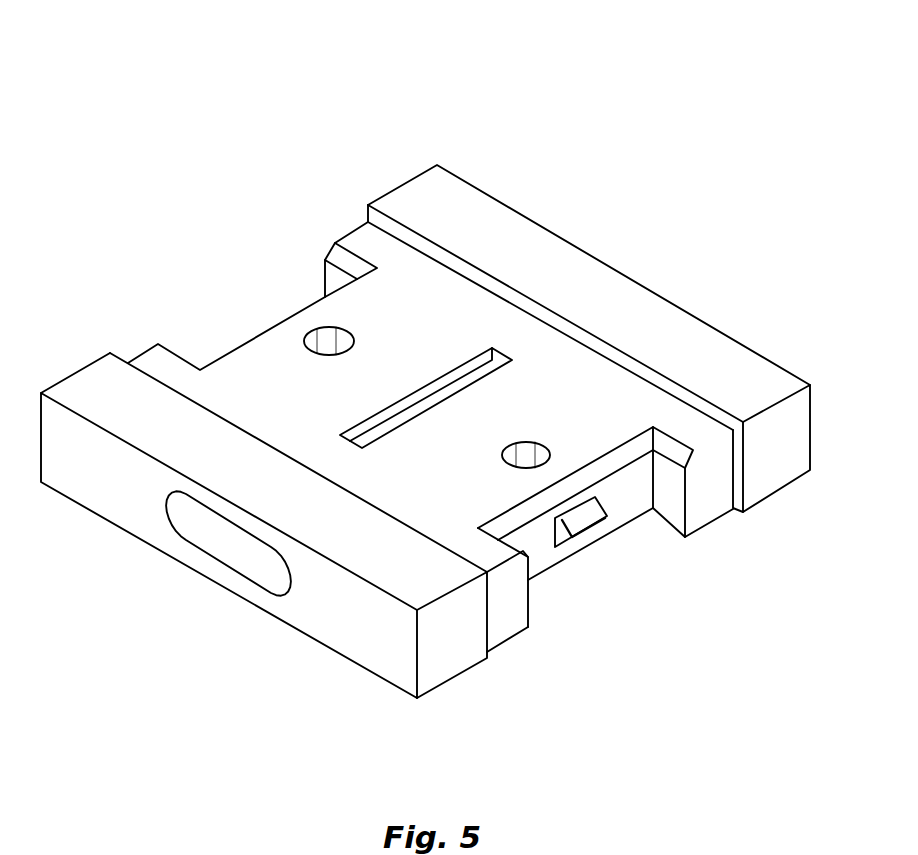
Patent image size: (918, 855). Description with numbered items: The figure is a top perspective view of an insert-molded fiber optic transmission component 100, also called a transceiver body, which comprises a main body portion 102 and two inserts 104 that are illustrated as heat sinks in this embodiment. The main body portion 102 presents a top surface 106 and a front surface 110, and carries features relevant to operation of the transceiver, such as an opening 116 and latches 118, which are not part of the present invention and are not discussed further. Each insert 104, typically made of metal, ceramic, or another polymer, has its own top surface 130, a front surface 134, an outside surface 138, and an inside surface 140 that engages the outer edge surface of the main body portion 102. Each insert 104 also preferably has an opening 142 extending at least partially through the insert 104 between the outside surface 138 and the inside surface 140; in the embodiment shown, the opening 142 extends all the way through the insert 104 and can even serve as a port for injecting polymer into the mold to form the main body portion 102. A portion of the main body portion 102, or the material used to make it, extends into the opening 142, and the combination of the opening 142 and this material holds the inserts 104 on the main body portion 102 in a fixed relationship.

The fiber optic transmission component 100 is at (377, 120).
The main body portion 102 is at (268, 330).
The insert 104 is at (530, 213).
The top surface 106 is at (436, 305).
The front surface 110 is at (504, 623).
The opening 116 is at (453, 408).
The latch 118 is at (593, 522).
The top surface 130 is at (653, 327).
The front surface 134 is at (786, 462).
The outside surface 138 is at (310, 606).
The inside surface 140 is at (706, 400).
The opening 142 is at (238, 562).